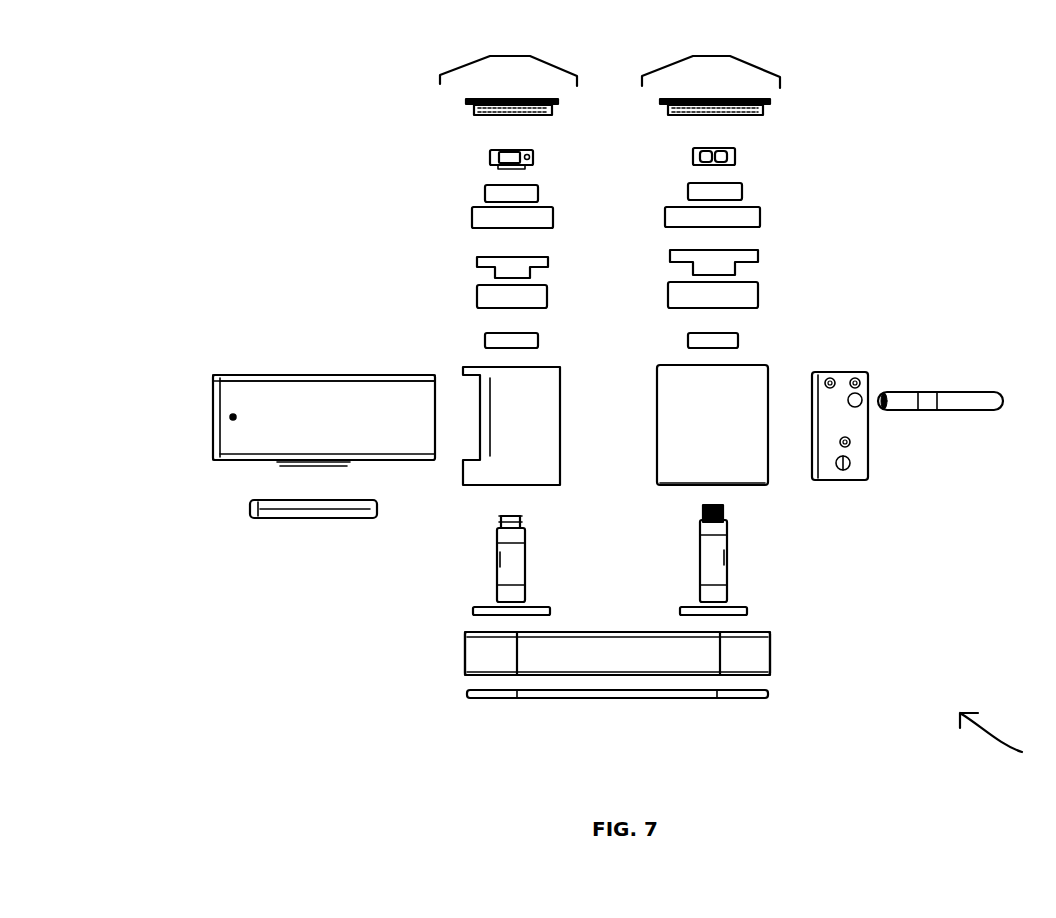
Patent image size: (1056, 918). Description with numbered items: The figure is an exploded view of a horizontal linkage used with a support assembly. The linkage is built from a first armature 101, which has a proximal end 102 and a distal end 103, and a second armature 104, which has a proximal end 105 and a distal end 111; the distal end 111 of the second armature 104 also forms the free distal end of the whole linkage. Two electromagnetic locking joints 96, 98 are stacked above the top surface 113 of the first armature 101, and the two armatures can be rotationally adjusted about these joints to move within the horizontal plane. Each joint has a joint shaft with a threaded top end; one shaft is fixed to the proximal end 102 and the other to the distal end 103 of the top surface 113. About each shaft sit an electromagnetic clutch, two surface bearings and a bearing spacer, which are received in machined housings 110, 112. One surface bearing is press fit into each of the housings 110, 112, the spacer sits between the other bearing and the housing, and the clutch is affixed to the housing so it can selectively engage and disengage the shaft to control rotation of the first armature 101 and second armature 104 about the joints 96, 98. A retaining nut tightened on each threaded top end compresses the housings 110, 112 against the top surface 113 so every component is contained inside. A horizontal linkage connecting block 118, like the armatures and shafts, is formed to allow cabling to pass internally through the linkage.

The first electromagnetic locking joint 96 is at (711, 74).
The second electromagnetic locking joint 98 is at (508, 74).
The first armature 101 is at (480, 662).
The proximal end 102 is at (770, 660).
The distal end 103 is at (463, 660).
The second armature 104 is at (322, 376).
The proximal end 105 is at (436, 410).
The machined housing 110 is at (750, 393).
The distal end 111 is at (213, 413).
The machined housing 112 is at (538, 426).
The top surface 113 is at (607, 632).
The horizontal linkage connecting block 118 is at (868, 460).